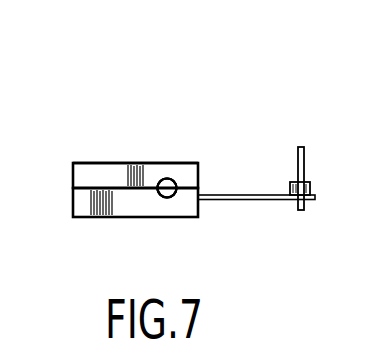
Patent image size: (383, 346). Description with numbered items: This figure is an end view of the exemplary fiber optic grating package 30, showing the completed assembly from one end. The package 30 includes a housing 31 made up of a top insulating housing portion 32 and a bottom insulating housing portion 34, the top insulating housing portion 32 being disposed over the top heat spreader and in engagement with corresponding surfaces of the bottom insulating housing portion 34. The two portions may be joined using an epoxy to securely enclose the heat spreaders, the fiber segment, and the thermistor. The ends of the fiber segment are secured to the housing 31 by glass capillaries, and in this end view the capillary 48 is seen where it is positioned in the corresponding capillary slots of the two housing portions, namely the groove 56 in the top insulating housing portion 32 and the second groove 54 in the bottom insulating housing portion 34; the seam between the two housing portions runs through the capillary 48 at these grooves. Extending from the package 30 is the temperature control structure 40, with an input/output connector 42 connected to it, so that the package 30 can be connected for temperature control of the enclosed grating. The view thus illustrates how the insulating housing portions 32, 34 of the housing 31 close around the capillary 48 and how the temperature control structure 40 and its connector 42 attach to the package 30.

The fiber optic grating package 30 is at (179, 138).
The housing 31 is at (169, 162).
The top insulating housing portion 32 is at (73, 166).
The bottom insulating housing portion 34 is at (73, 207).
The glass capillary 48 is at (158, 185).
The second groove 54 is at (158, 198).
The groove 56 is at (176, 180).
The input/output connector 42 is at (290, 182).
The temperature control structure 40 is at (310, 190).